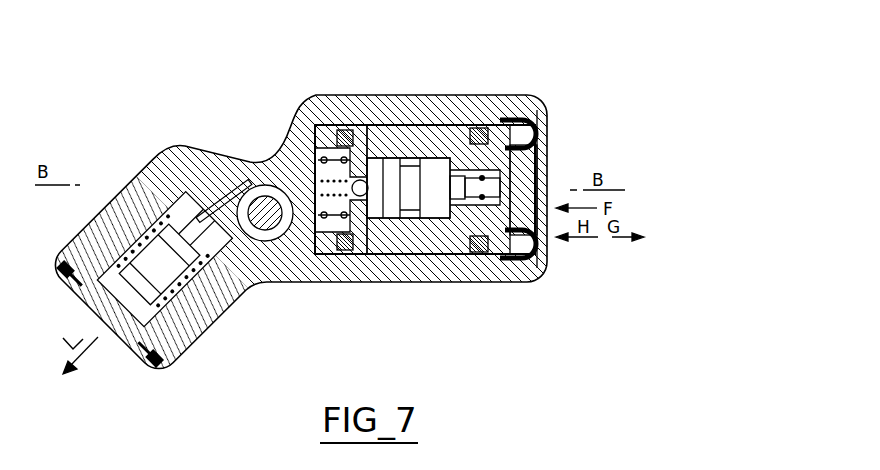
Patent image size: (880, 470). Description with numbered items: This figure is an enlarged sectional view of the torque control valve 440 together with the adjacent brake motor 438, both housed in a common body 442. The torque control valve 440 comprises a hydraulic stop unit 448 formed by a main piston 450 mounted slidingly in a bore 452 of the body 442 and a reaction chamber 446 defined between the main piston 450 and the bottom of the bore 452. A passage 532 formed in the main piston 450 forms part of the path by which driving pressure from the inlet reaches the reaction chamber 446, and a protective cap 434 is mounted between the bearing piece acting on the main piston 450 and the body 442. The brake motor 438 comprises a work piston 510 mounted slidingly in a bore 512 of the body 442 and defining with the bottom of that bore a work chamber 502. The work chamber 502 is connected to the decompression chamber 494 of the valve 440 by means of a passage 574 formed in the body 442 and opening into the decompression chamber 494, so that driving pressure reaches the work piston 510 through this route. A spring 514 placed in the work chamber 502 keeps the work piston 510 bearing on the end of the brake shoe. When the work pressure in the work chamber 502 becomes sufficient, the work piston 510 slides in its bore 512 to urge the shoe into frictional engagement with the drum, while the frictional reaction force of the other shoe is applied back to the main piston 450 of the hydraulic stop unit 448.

The protective cap 434 is at (542, 278).
The brake motor 438 is at (151, 140).
The torque control valve 440 is at (460, 82).
The body 442 is at (247, 290).
The reaction chamber 446 is at (318, 272).
The hydraulic stop unit 448 is at (308, 140).
The main piston 450 is at (392, 133).
The bore 452 is at (467, 140).
The decompression chamber 494 is at (268, 186).
The work chamber 502 is at (166, 155).
The work piston 510 is at (117, 260).
The bore 512 is at (112, 215).
The spring 514 is at (140, 200).
The passage 532 is at (405, 262).
The passage 574 is at (212, 165).